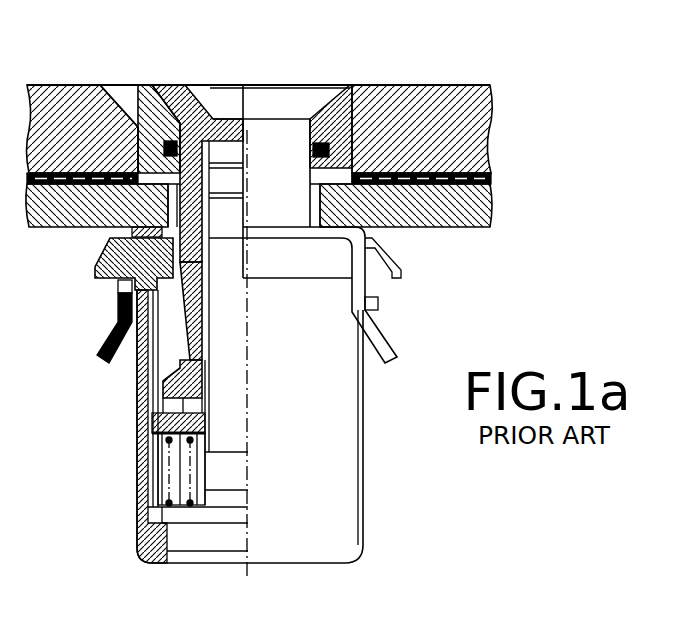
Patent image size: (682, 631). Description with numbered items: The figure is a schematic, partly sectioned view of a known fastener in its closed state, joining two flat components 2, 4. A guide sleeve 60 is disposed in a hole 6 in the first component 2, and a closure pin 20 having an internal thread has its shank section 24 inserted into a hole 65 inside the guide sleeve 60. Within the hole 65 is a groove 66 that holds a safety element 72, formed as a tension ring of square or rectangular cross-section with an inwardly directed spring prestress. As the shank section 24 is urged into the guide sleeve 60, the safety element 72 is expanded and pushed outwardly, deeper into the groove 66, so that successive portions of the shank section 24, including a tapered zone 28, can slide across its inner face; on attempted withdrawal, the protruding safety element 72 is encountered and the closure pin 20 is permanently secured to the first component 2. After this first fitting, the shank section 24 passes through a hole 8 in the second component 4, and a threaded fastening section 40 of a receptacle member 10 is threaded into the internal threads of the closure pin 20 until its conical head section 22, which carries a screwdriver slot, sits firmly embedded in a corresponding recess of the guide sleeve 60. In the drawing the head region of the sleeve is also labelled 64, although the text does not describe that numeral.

The first component 2 is at (493, 127).
The second component 4 is at (452, 214).
The hole 6 is at (147, 130).
The hole 8 is at (312, 100).
The receptacle member 10 is at (364, 482).
The closure pin 20 is at (241, 113).
The conical head section 22 is at (258, 137).
The shank section 24 is at (205, 293).
The tapered zone 28 is at (192, 328).
The threaded fastening section 40 is at (230, 409).
The guide sleeve 60 is at (372, 85).
The head flange 64 is at (362, 137).
The hole 65 is at (308, 133).
The groove 66 is at (166, 140).
The safety element 72 is at (134, 143).